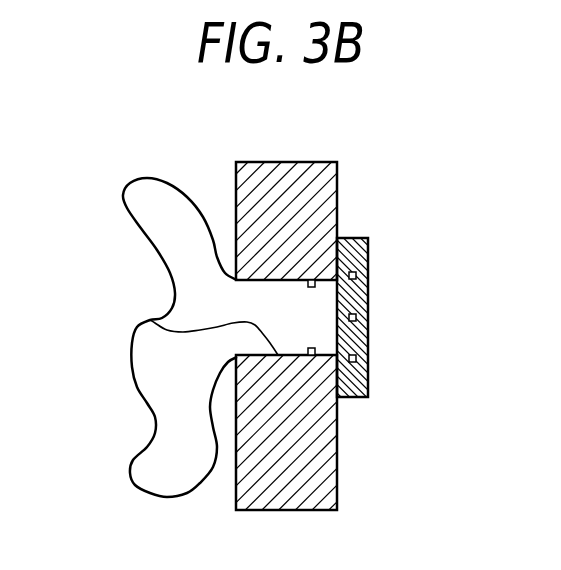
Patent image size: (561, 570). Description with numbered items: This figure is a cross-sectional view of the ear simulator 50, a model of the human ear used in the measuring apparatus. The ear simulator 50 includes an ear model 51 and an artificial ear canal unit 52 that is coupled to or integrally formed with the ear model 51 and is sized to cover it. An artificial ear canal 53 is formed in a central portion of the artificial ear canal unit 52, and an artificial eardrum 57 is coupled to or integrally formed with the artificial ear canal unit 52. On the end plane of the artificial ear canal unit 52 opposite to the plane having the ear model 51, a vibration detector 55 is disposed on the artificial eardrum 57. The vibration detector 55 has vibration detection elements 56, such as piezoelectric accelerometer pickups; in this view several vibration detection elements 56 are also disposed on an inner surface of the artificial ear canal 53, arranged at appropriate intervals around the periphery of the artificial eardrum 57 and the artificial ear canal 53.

The ear simulator 50 is at (356, 297).
The ear model 51 is at (138, 197).
The artificial ear canal unit 52 is at (339, 178).
The artificial ear canal 53 is at (165, 320).
The vibration detector 55 is at (378, 371).
The vibration detection element 56 is at (357, 275).
The artificial eardrum 57 is at (369, 253).